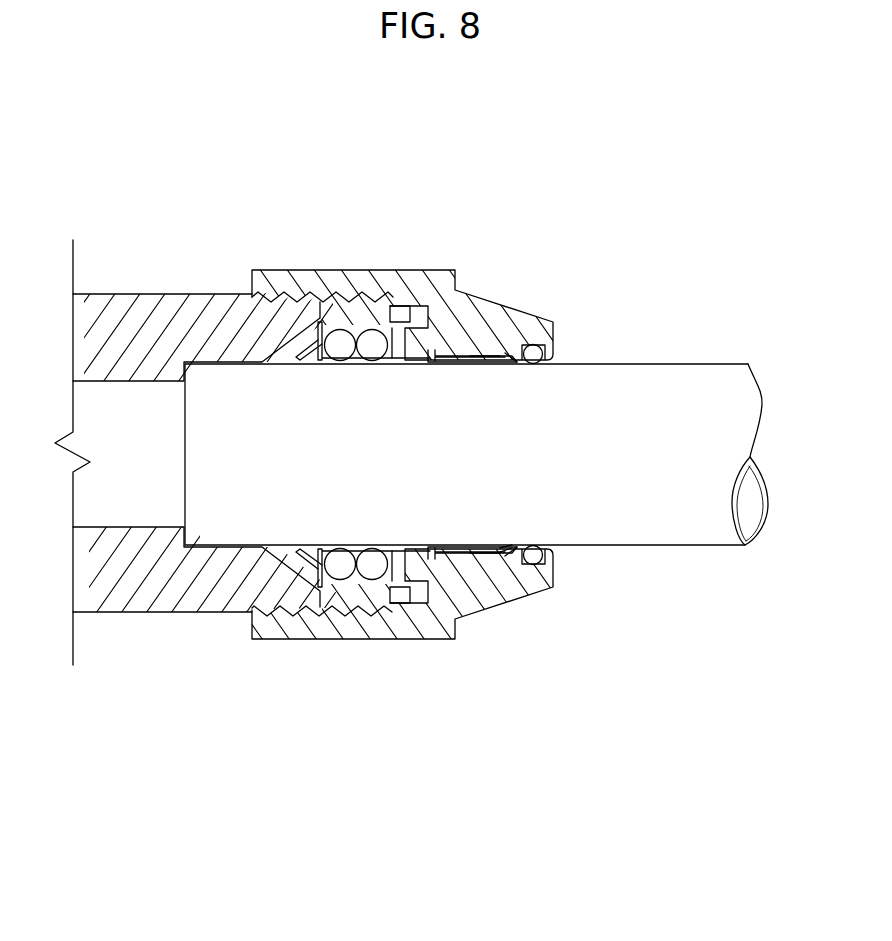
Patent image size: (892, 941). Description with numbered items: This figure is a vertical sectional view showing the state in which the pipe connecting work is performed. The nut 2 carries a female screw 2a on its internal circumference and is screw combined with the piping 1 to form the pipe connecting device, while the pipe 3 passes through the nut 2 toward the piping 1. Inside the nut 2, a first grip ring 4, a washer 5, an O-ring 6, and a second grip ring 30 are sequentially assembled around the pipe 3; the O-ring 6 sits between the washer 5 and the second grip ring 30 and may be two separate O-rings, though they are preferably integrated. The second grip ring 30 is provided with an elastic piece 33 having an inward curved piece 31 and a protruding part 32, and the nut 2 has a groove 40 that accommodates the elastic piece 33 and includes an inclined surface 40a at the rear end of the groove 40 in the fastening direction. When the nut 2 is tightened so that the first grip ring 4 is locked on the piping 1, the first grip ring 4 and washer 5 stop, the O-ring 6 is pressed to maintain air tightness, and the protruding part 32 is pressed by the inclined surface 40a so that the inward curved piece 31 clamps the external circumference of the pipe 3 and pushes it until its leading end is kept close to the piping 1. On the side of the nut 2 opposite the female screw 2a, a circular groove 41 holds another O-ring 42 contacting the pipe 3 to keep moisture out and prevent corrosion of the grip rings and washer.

The piping 1 is at (137, 310).
The nut 2 is at (545, 592).
The female screw 2a is at (263, 305).
The pipe 3 is at (680, 530).
The first grip ring 4 is at (292, 598).
The washer 5 is at (322, 607).
The O-ring 6 is at (382, 342).
The second grip ring 30 is at (410, 326).
The inward curved piece 31 is at (457, 356).
The protruding part 32 is at (483, 352).
The elastic piece 33 is at (505, 352).
The groove 40 is at (450, 620).
The inclined surface 40a is at (485, 548).
The circular groove 41 is at (548, 565).
The O-ring 42 is at (540, 345).